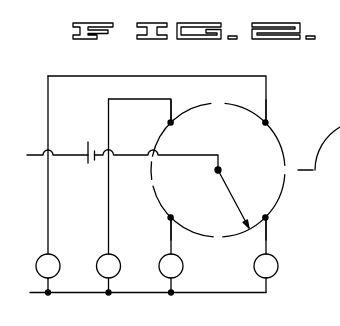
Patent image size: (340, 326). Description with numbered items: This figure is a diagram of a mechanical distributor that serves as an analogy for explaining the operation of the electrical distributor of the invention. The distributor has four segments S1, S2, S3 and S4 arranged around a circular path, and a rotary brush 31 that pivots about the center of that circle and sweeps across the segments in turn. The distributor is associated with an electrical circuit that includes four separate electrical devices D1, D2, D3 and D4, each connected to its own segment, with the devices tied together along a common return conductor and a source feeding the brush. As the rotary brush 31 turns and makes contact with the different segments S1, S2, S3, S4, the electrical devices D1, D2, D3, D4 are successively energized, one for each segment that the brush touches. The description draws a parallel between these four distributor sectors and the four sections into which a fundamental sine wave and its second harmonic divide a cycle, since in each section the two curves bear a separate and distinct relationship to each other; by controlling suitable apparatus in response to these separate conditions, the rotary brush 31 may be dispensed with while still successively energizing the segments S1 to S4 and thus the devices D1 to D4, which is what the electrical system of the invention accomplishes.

The distributor segment S1 is at (280, 225).
The distributor segment S2 is at (157, 223).
The distributor segment S3 is at (158, 115).
The distributor segment S4 is at (279, 115).
The rotary brush 31 is at (228, 187).
The electrical device D1 is at (279, 265).
The electrical device D2 is at (184, 265).
The electrical device D3 is at (117, 258).
The electrical device D4 is at (57, 258).